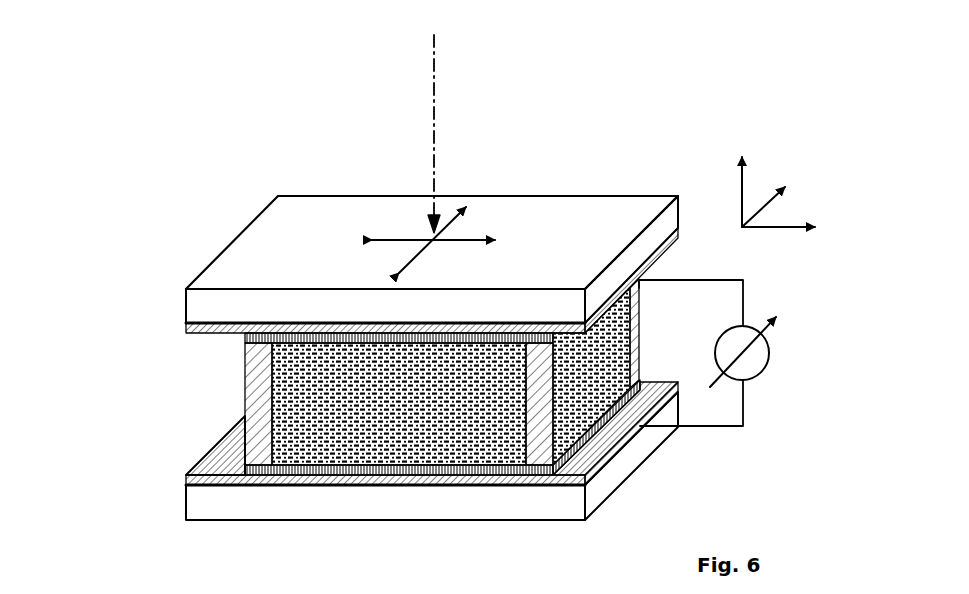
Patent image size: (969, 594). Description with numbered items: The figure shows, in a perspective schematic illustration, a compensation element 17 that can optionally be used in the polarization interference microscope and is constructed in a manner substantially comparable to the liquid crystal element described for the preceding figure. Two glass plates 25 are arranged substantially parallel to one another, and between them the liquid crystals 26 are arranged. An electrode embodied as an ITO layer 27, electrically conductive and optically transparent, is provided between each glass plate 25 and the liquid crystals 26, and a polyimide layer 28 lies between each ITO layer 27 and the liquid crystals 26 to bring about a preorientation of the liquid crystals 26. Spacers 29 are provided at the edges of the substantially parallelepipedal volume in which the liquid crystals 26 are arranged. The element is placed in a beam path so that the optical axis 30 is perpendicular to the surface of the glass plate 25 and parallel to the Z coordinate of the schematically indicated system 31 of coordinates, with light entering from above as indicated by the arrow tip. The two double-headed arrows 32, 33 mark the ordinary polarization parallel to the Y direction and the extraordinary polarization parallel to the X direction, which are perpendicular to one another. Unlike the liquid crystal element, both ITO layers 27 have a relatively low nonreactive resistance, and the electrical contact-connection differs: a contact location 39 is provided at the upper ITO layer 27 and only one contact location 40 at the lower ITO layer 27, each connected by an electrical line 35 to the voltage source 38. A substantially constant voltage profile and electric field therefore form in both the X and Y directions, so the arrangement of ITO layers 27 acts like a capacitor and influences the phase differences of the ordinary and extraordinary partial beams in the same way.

The compensation element 17 is at (287, 165).
The glass plate 25 is at (272, 242).
The liquid crystals 26 is at (315, 440).
The ITO layer 27 is at (186, 328).
The polyimide layer 28 is at (245, 338).
The spacer 29 is at (245, 405).
The optical axis 30 is at (435, 95).
The system of coordinates 31 is at (783, 117).
The double-headed arrow 32 is at (410, 237).
The double-headed arrow 33 is at (448, 217).
The electrical line 35 is at (687, 280).
The voltage source 38 is at (745, 362).
The contact location 39 is at (640, 298).
The contact location 40 is at (645, 428).